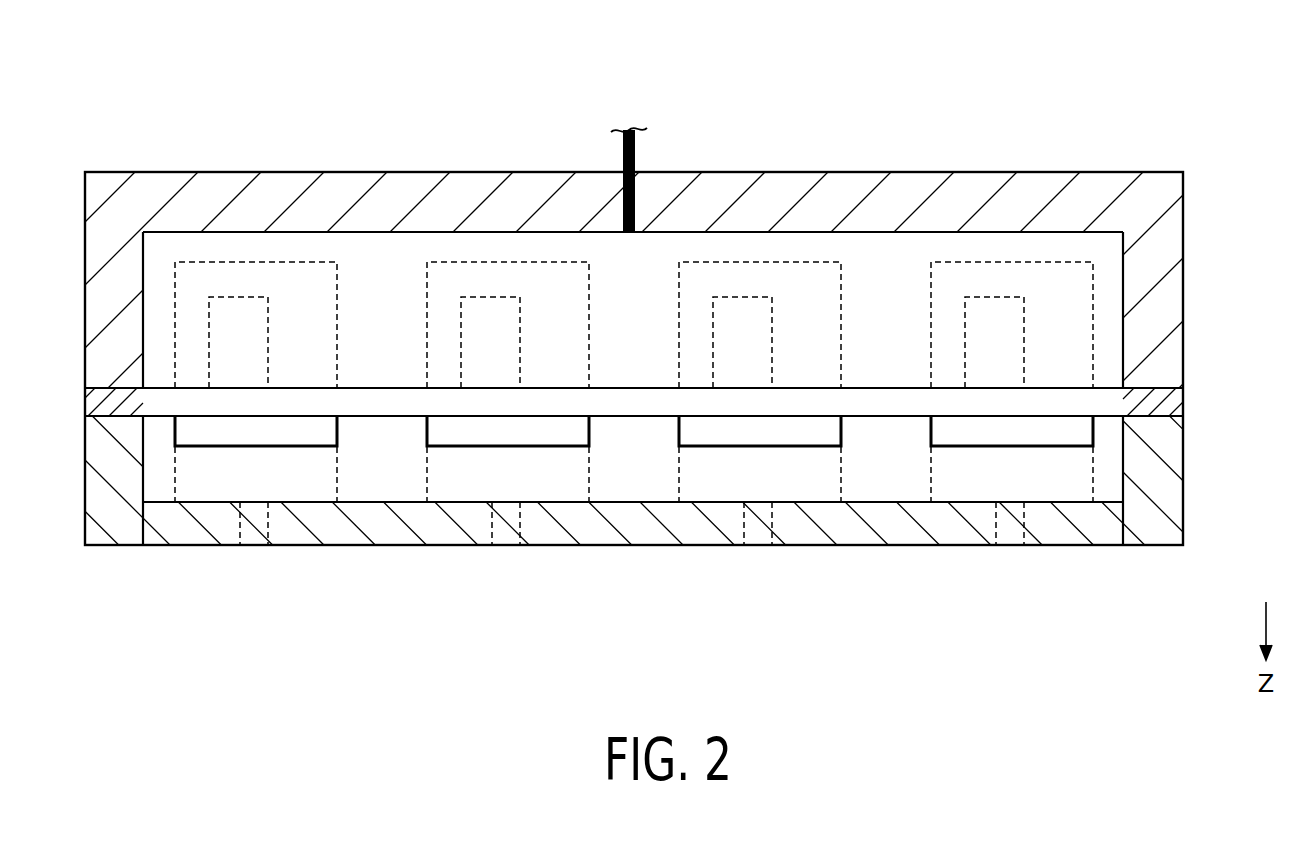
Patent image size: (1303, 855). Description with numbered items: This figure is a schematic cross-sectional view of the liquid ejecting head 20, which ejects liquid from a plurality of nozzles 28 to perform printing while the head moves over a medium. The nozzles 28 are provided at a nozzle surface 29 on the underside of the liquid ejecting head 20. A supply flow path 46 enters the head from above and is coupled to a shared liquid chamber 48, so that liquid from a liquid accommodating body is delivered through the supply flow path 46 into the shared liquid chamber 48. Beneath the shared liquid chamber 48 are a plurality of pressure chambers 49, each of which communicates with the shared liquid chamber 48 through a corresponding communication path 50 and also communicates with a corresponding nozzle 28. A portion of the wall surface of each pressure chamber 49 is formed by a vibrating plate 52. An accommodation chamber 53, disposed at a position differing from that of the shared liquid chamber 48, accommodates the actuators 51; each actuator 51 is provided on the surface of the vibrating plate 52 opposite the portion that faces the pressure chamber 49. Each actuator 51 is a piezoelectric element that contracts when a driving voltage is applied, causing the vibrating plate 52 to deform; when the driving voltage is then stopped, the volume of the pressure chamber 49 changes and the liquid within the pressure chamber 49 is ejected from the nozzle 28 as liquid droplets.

The liquid ejecting head 20 is at (92, 98).
The nozzle 28 is at (252, 526).
The nozzle surface 29 is at (392, 548).
The supply flow path 46 is at (636, 148).
The shared liquid chamber 48 is at (357, 236).
The pressure chamber 49 is at (178, 486).
The communication path 50 is at (312, 443).
The actuator 51 is at (268, 337).
The vibrating plate 52 is at (623, 387).
The accommodation chamber 53 is at (315, 263).